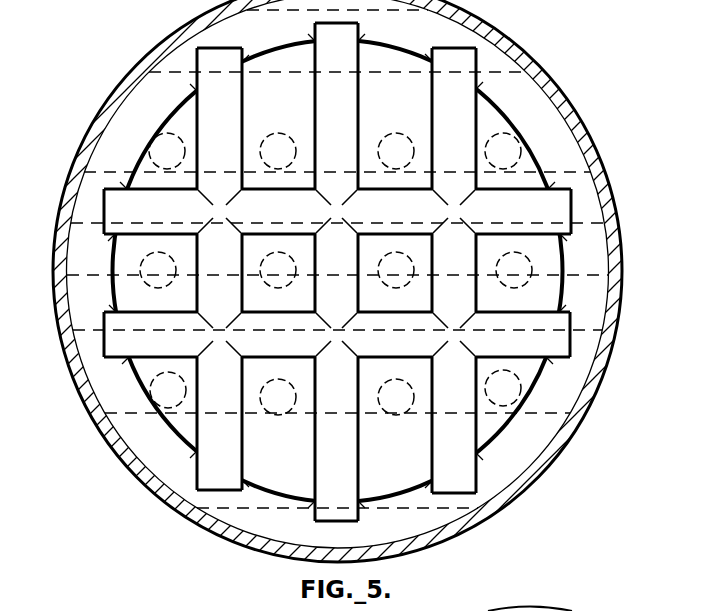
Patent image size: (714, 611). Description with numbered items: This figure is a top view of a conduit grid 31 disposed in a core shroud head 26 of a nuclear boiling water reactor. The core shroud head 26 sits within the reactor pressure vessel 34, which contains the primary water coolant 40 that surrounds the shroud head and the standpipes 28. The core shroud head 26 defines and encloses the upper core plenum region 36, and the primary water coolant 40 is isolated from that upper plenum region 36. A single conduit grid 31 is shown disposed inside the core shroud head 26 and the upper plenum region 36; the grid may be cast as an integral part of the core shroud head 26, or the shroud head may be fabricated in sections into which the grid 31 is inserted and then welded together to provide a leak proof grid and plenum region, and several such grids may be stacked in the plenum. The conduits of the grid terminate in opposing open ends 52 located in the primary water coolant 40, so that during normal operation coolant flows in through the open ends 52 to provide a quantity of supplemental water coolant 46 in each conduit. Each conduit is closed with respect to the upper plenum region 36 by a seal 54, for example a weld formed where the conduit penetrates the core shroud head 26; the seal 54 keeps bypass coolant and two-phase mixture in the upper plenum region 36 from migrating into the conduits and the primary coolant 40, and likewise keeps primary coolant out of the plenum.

The core shroud head 26 is at (562, 287).
The standpipes 28 is at (512, 136).
The conduit grid 31 is at (176, 370).
The reactor pressure vessel 34 is at (621, 256).
The upper core plenum region 36 is at (527, 375).
The primary water coolant 40 is at (138, 123).
The supplemental water coolant 46 is at (128, 343).
The open ends 52 is at (572, 213).
The seal 54 is at (197, 457).